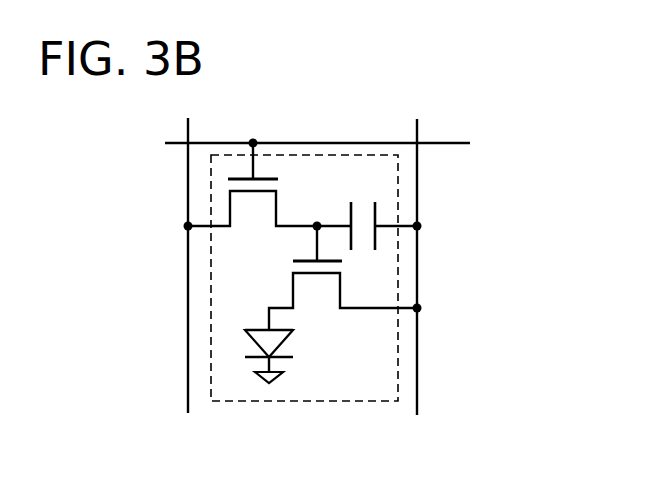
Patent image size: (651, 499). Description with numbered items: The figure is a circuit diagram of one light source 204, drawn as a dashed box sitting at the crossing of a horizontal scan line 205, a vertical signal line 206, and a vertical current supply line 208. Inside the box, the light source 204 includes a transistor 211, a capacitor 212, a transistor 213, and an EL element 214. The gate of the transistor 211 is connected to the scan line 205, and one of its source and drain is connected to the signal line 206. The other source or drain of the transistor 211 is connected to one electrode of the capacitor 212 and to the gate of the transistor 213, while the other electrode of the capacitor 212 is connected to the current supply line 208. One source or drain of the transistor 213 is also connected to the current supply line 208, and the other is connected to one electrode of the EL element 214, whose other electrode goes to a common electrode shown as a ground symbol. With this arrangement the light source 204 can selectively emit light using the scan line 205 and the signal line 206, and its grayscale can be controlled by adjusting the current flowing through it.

The light source 204 is at (293, 402).
The scan line 205 is at (164, 145).
The signal line 206 is at (187, 130).
The current supply line 208 is at (418, 382).
The transistor 211 is at (278, 198).
The capacitor 212 is at (378, 224).
The transistor 213 is at (343, 312).
The EL element 214 is at (258, 327).